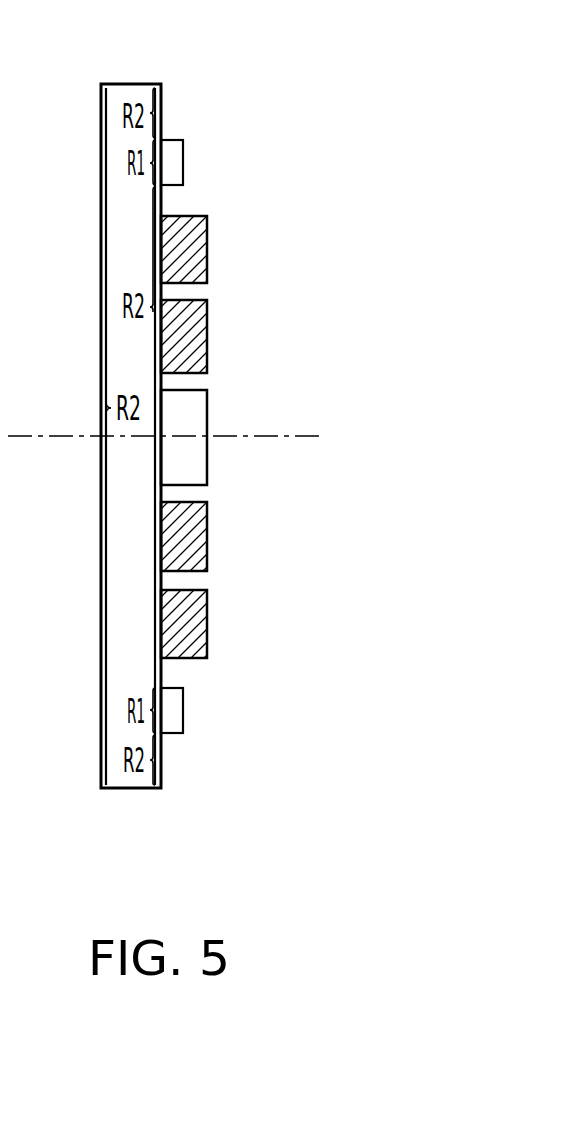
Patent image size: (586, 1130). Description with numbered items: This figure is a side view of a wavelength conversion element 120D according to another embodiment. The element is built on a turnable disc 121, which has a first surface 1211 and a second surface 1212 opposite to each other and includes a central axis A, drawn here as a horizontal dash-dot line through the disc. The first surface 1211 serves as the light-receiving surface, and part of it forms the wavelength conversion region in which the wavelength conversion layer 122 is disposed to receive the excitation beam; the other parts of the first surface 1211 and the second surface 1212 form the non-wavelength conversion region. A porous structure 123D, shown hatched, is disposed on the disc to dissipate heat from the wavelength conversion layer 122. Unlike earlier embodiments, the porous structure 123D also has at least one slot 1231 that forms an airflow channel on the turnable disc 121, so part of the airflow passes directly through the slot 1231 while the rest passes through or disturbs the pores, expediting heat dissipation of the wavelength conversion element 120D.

The turnable disc 121 is at (130, 788).
The second surface 1212 is at (86, 101).
The first surface 1211 is at (177, 101).
The wavelength conversion layer 122 is at (171, 165).
The porous structure 123D is at (195, 248).
The slot 1231 is at (202, 292).
The wavelength conversion element 120D is at (427, 880).
The central axis A is at (179, 437).